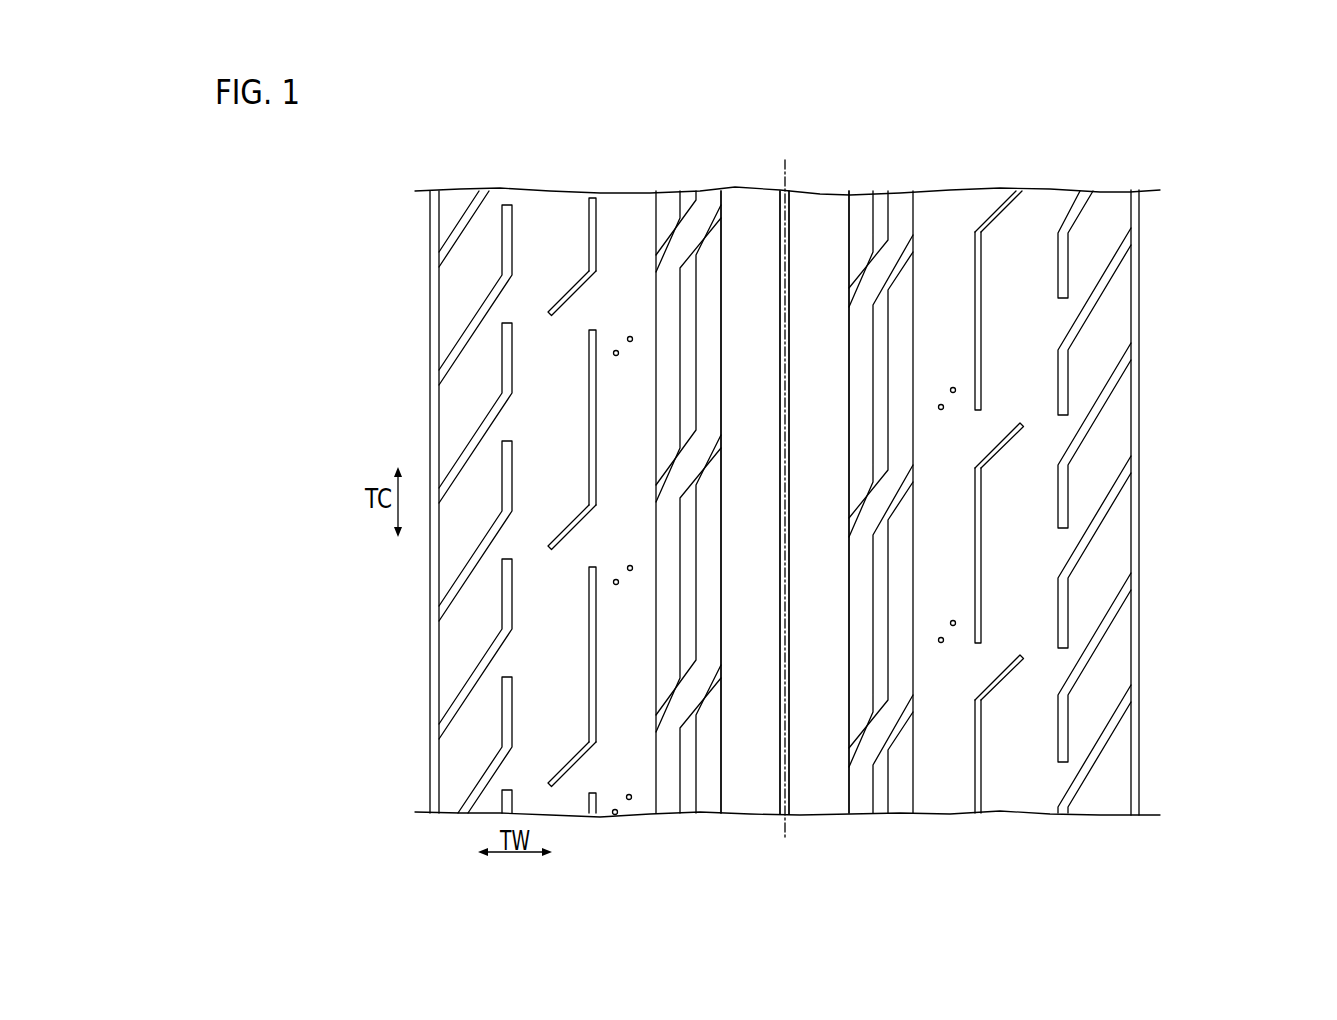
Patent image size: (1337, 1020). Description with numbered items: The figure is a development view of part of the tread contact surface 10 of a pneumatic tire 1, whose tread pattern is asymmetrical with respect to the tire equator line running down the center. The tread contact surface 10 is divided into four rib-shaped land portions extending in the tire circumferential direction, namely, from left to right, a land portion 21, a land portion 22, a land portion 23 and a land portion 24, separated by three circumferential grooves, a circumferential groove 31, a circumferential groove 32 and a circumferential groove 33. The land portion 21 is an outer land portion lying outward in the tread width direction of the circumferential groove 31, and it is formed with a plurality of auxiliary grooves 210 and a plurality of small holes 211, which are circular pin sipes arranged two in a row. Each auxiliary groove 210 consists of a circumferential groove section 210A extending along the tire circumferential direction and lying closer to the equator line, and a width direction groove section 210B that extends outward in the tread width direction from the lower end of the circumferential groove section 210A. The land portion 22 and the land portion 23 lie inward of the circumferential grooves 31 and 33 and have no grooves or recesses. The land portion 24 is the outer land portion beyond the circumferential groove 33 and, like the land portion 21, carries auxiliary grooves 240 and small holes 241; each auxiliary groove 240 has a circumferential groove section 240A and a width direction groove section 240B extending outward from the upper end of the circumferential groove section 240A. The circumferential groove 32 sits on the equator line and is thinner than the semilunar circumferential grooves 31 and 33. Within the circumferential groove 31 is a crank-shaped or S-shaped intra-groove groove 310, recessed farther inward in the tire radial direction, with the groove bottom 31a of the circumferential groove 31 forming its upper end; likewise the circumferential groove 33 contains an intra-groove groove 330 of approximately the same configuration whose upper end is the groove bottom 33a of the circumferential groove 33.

The pneumatic tire 1 is at (1086, 131).
The tread contact surface 10 is at (787, 502).
The land portion 21 is at (542, 203).
The land portion 22 is at (734, 206).
The land portion 23 is at (818, 206).
The land portion 24 is at (1043, 206).
The circumferential groove 31 is at (684, 180).
The circumferential groove 32 is at (780, 180).
The circumferential groove 33 is at (886, 180).
The intra-groove groove 310 is at (692, 344).
The groove bottom 31a is at (713, 625).
The intra-groove groove 330 is at (874, 365).
The groove bottom 33a is at (864, 670).
The auxiliary groove 210 is at (340, 375).
The circumferential groove section 210A is at (588, 390).
The width direction groove section 210B is at (571, 518).
The small hole 211 is at (632, 341).
The auxiliary groove 240 is at (1230, 460).
The circumferential groove section 240A is at (983, 522).
The width direction groove section 240B is at (1003, 447).
The small hole 241 is at (955, 392).